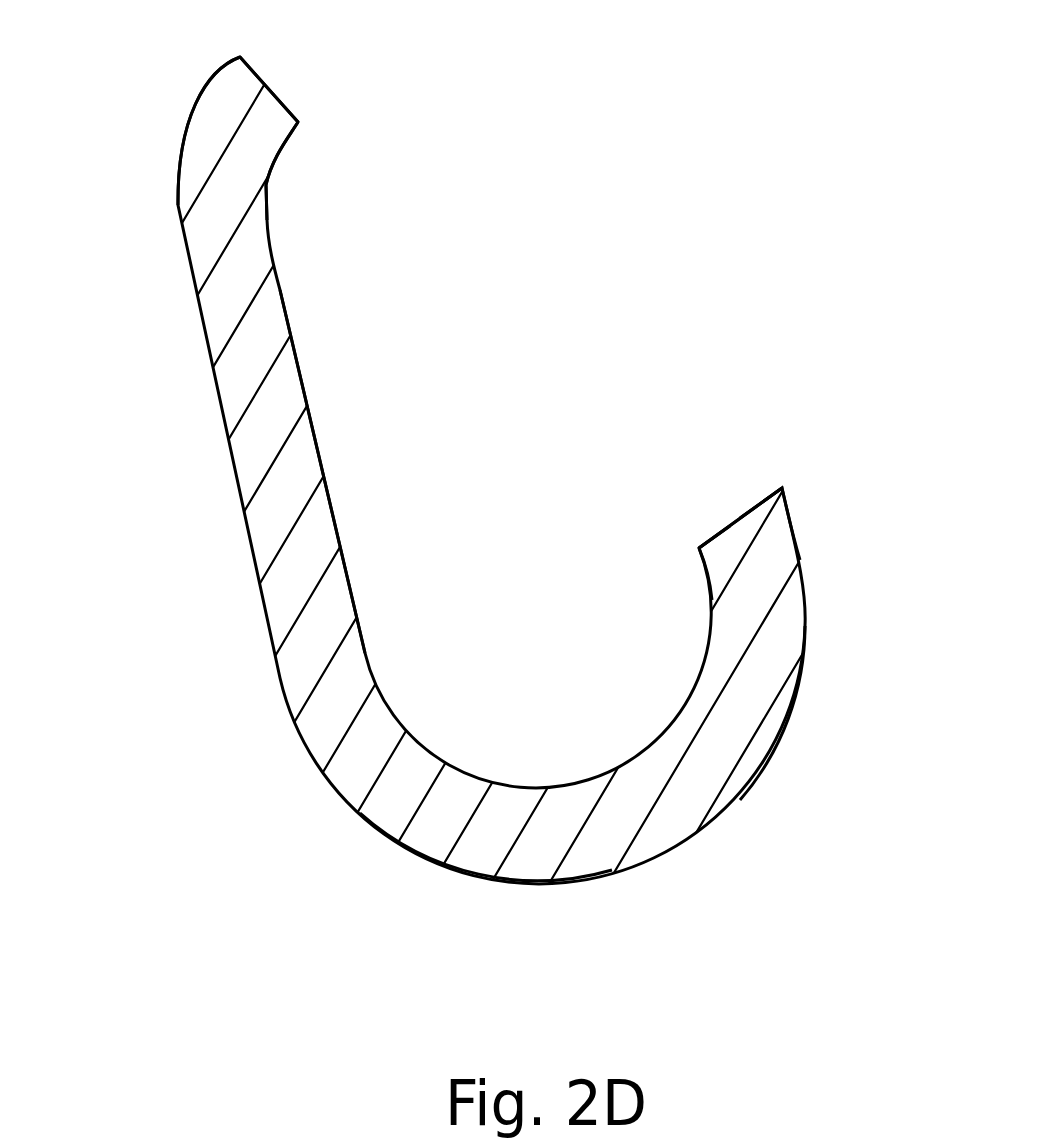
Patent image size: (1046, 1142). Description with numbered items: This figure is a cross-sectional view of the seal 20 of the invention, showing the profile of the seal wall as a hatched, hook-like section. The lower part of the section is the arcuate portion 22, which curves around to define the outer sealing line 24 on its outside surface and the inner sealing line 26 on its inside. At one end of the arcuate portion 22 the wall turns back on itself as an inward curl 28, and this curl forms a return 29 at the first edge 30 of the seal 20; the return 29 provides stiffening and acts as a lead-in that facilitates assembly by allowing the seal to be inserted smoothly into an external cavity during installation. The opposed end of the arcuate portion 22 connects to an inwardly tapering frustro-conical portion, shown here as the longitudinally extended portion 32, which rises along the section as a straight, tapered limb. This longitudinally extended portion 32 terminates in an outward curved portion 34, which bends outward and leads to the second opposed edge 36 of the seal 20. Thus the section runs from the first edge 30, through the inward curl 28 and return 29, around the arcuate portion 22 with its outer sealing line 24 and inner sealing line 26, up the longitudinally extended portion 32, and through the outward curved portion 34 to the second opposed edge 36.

The seal 20 is at (443, 372).
The arcuate portion 22 is at (440, 866).
The outer sealing line 24 is at (808, 667).
The inner sealing line 26 is at (178, 207).
The inward curl 28 is at (790, 505).
The return 29 is at (700, 547).
The first edge 30 is at (723, 528).
The longitudinally extended portion 32 is at (282, 296).
The outward curved portion 34 is at (282, 160).
The second opposed edge 36 is at (250, 68).